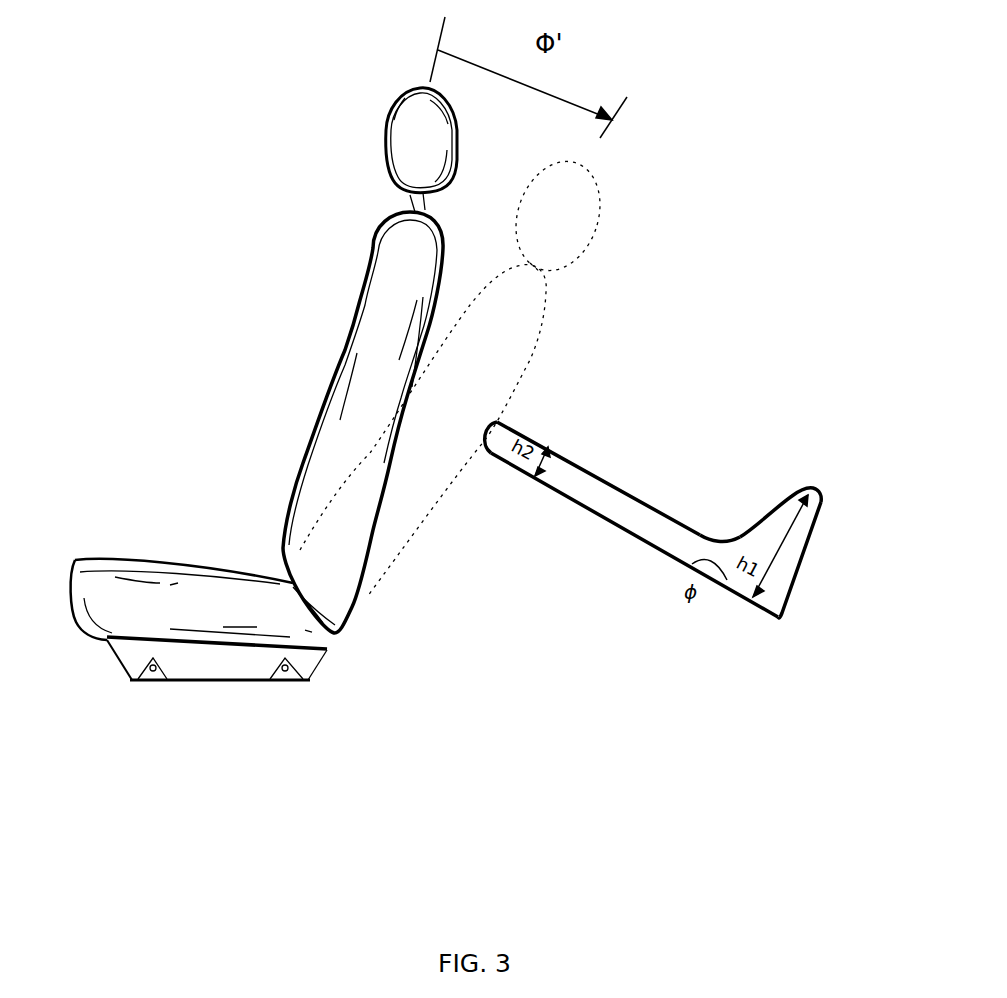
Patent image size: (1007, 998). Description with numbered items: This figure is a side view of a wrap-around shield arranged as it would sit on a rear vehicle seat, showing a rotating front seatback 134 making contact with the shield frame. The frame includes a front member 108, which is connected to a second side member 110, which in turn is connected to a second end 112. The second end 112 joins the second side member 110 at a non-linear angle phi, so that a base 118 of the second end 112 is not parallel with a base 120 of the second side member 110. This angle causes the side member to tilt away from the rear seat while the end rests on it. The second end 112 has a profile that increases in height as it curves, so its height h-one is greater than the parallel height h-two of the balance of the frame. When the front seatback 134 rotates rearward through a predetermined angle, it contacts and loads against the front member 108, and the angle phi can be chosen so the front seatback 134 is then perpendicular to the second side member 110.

The front seatback 134 is at (378, 322).
The front member 108 is at (496, 437).
The base of side member 120 is at (613, 520).
The second side member 110 is at (700, 542).
The second end 112 is at (770, 505).
The base of end 118 is at (760, 603).